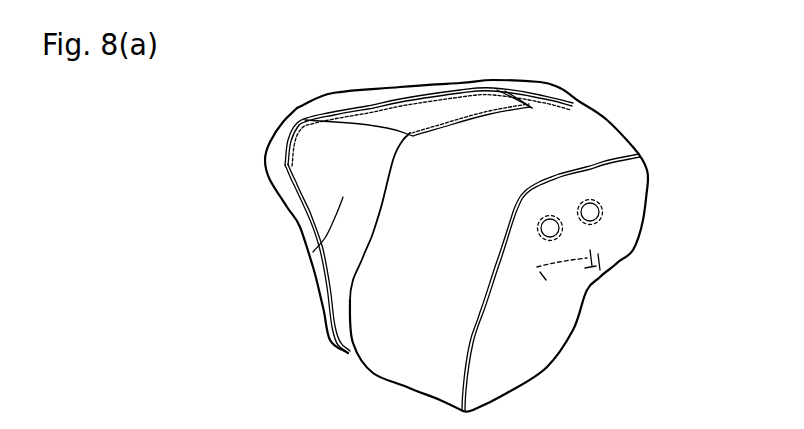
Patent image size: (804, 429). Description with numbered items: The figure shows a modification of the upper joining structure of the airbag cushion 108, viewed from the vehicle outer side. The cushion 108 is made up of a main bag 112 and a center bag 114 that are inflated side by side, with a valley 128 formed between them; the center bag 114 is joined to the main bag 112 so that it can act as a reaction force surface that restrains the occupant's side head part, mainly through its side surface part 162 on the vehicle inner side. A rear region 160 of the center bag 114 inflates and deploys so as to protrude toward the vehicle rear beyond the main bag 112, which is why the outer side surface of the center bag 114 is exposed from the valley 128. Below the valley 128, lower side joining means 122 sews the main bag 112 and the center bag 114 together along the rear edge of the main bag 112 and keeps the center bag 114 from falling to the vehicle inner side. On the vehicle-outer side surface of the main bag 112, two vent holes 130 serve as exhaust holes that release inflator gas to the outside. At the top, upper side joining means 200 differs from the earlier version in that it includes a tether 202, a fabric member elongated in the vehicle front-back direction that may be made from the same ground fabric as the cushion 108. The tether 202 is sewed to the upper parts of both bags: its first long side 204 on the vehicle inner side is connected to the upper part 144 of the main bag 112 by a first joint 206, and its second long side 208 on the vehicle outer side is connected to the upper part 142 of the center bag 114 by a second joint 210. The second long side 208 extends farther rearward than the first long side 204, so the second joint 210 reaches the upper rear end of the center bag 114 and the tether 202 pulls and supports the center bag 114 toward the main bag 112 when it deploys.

The cushion 108 is at (302, 104).
The main bag 112 is at (610, 118).
The center bag 114 is at (278, 162).
The lower side joining means 122 is at (350, 305).
The valley 128 is at (385, 195).
The vent holes 130 is at (601, 208).
The upper part of the center bag 142 is at (291, 107).
The upper part of the main bag 144 is at (597, 153).
The rear region 160 is at (289, 190).
The side surface part 162 is at (308, 248).
The upper side joining means 200 is at (493, 88).
The tether 202 is at (448, 108).
The first long side 204 is at (521, 109).
The first joint 206 is at (487, 113).
The second long side 208 is at (343, 107).
The second joint 210 is at (392, 108).